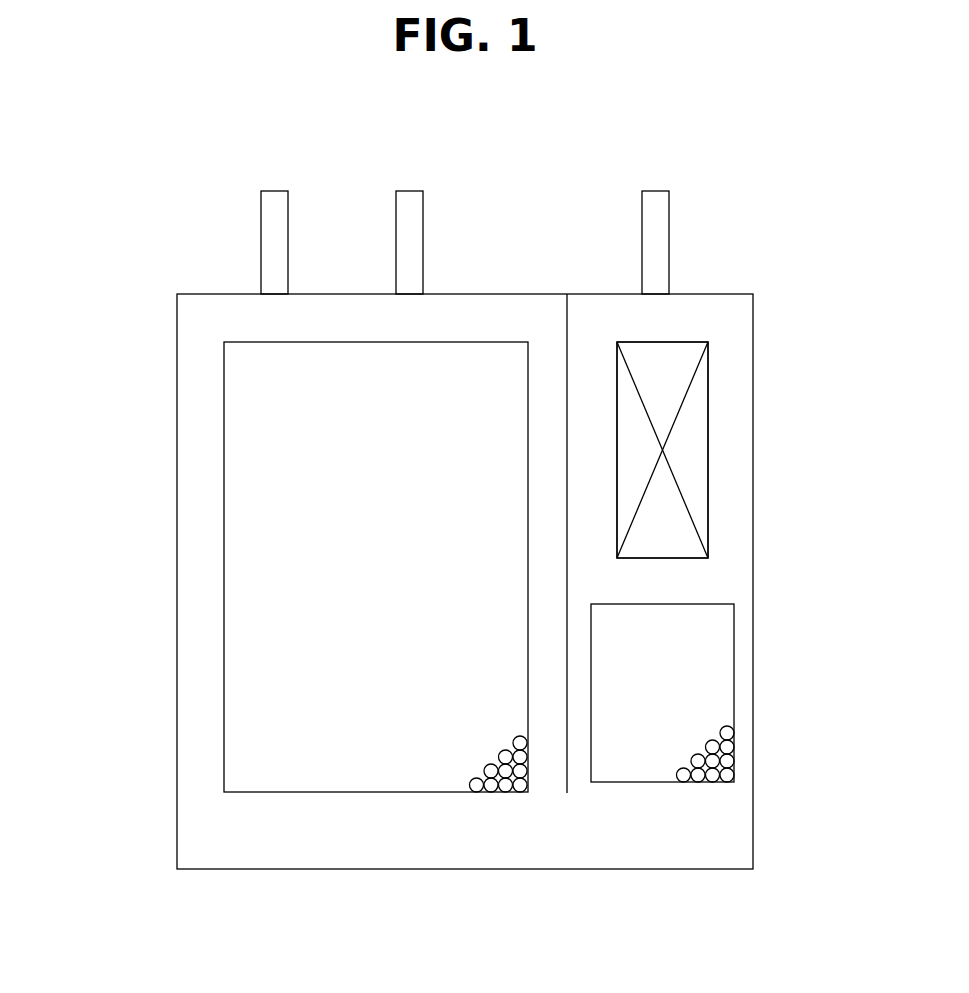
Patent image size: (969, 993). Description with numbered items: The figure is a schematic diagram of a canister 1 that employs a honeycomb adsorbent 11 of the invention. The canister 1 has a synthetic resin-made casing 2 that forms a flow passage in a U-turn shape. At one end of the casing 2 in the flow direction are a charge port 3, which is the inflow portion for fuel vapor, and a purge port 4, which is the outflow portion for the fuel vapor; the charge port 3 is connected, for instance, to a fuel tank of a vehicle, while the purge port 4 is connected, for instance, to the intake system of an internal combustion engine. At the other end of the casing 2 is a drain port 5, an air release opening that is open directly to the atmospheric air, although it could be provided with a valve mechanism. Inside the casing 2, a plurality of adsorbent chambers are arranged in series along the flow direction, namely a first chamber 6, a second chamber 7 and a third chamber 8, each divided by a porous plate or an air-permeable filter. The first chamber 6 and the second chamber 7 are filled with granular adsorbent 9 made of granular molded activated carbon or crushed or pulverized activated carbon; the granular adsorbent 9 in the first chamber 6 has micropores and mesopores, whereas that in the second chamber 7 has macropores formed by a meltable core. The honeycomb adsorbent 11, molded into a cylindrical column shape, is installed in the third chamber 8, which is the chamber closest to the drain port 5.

The canister 1 is at (158, 379).
The casing 2 is at (177, 797).
The charge port 3 is at (268, 215).
The purge port 4 is at (405, 215).
The drain port 5 is at (653, 215).
The first chamber 6 is at (245, 676).
The second chamber 7 is at (673, 674).
The third chamber 8 is at (707, 470).
The granular adsorbent 9 is at (513, 793).
The honeycomb adsorbent 11 is at (672, 377).